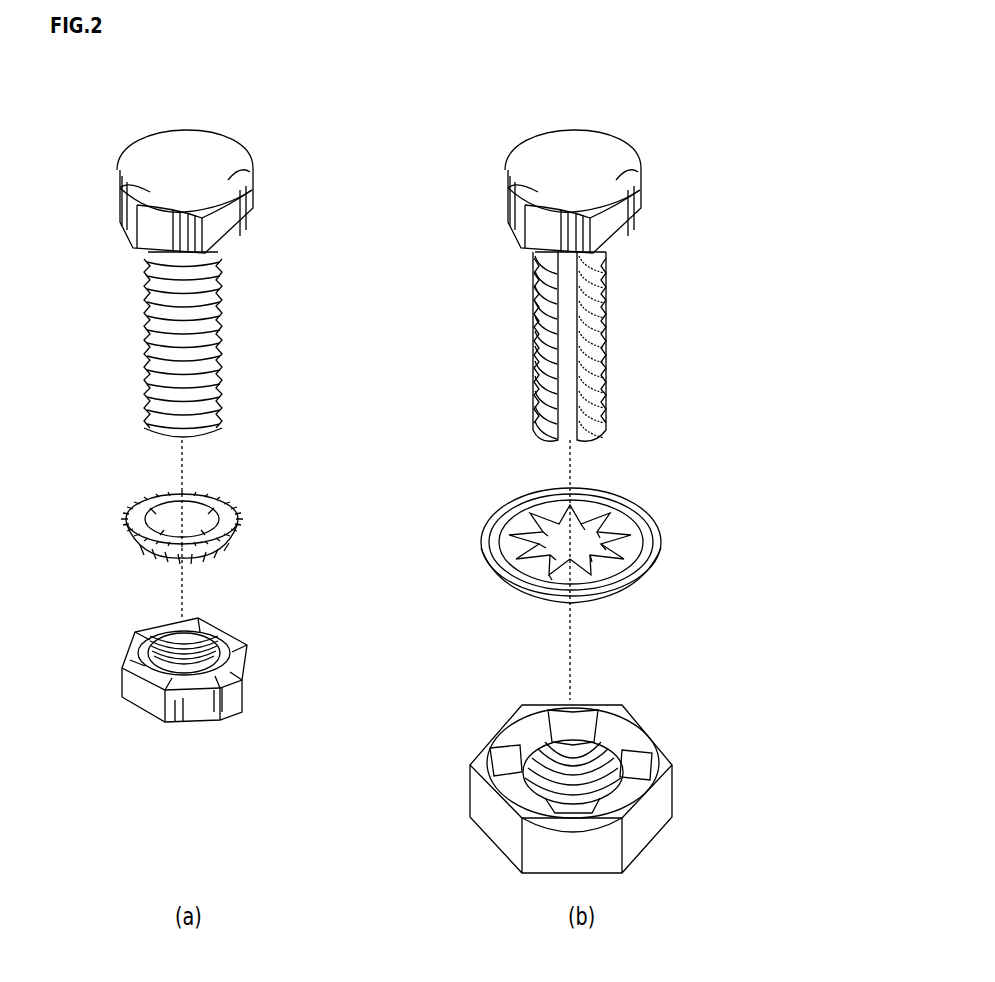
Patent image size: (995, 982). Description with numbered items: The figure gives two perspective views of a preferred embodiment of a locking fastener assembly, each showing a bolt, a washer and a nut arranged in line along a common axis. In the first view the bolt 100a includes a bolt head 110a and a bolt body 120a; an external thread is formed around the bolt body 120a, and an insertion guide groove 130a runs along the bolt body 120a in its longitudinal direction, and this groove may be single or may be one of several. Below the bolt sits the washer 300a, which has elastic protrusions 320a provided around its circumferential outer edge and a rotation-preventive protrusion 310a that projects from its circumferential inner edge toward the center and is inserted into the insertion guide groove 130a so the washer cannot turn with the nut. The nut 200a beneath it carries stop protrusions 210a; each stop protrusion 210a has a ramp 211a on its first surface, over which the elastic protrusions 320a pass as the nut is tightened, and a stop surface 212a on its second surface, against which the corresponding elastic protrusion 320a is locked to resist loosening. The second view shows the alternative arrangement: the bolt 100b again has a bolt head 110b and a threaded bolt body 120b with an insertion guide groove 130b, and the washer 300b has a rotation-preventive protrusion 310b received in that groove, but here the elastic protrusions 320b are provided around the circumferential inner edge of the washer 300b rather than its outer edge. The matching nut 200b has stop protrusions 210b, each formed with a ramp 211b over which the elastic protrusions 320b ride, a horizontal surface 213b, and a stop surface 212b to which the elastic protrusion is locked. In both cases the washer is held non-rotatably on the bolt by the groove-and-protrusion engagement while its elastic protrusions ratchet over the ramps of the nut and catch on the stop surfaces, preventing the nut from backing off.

The bolt 100a is at (265, 160).
The bolt head 110a is at (252, 207).
The bolt body 120a is at (210, 278).
The insertion guide groove 130a is at (218, 353).
The nut 200a is at (255, 621).
The stop protrusion 210a is at (155, 807).
The ramp 211a is at (185, 717).
The stop surface 212a is at (220, 714).
The washer 300a is at (254, 501).
The rotation-preventive protrusion 310a is at (132, 505).
The elastic protrusion 320a is at (217, 555).
The bolt 100b is at (661, 151).
The bolt head 110b is at (637, 208).
The bolt body 120b is at (605, 281).
The insertion guide groove 130b is at (578, 343).
The nut 200b is at (684, 745).
The stop protrusion 210b is at (535, 653).
The ramp 211b is at (545, 708).
The stop surface 212b is at (613, 704).
The horizontal surface 213b is at (580, 704).
The washer 300b is at (653, 494).
The rotation-preventive protrusion 310b is at (652, 562).
The elastic protrusion 320b is at (588, 518).